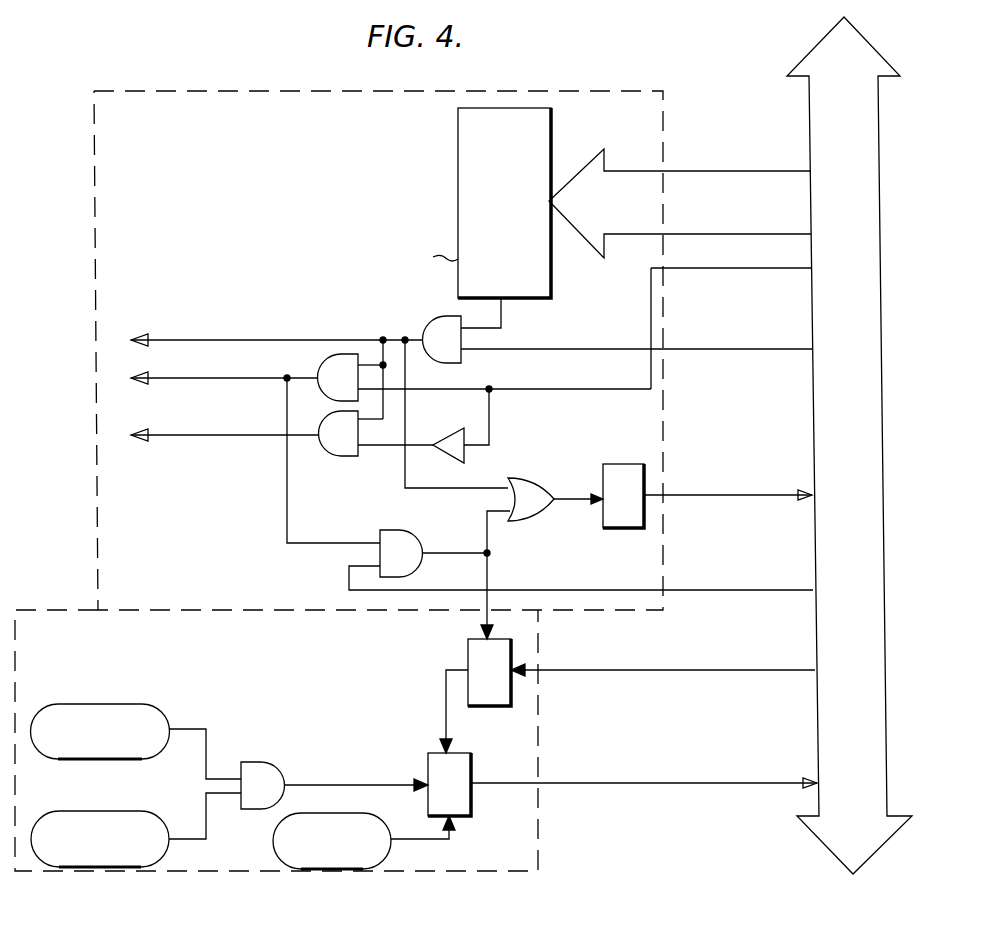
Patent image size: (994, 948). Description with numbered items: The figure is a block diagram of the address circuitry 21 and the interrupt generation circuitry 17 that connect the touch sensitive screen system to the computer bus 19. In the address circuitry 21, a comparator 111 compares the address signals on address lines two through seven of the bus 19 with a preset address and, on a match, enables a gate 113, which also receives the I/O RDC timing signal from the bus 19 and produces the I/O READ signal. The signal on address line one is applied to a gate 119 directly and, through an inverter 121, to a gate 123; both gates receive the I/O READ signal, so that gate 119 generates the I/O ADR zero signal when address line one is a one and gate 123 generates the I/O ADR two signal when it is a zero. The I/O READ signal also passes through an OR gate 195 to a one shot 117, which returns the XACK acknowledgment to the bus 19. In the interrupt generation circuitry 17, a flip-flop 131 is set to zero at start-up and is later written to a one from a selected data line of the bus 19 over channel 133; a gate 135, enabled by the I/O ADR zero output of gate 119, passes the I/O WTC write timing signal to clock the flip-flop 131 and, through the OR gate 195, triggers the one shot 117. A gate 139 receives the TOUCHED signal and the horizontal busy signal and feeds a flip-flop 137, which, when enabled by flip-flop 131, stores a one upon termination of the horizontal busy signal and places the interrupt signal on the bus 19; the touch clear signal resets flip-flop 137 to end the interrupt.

The interrupt generation circuitry 17 is at (68, 625).
The computer bus 19 is at (809, 121).
The address circuitry 21 is at (103, 232).
The comparator 111 is at (457, 134).
The gate 113 is at (455, 315).
The one shot 117 is at (618, 528).
The gate 119 is at (324, 360).
The inverter 121 is at (453, 459).
The gate 123 is at (339, 457).
The flip-flop 131 is at (465, 652).
The channel 133 is at (553, 675).
The gate 135 is at (415, 535).
The flip-flop 137 is at (472, 765).
The gate 139 is at (273, 762).
The OR gate 195 is at (531, 478).